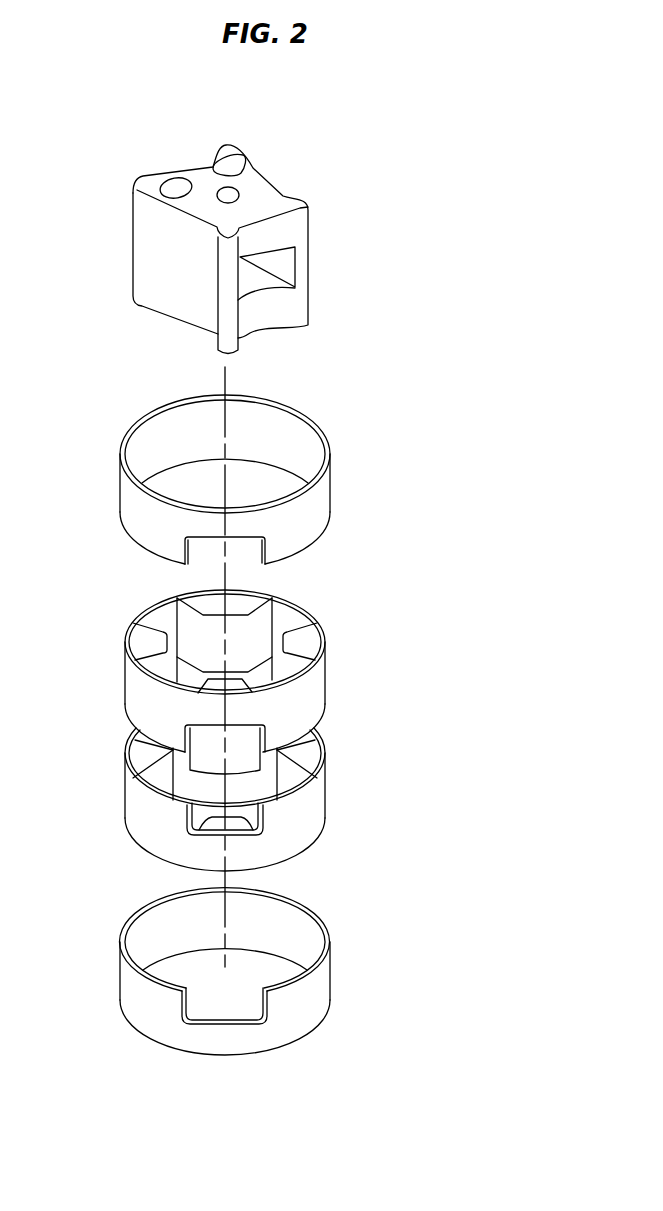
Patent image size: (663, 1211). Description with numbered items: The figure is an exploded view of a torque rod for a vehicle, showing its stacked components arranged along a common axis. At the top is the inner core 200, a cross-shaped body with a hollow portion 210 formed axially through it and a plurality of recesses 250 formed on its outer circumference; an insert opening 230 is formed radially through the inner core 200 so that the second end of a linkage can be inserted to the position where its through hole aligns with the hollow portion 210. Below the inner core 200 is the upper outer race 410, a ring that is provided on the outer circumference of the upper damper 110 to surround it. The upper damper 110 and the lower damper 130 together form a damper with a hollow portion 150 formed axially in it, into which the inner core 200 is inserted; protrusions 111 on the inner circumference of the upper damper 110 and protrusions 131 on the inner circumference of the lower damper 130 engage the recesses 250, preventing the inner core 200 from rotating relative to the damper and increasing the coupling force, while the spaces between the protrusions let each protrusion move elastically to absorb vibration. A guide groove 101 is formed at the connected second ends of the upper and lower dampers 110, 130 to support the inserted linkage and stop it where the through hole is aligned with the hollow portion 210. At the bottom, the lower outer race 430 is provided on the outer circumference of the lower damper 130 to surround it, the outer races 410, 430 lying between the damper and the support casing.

The inner core 200 is at (352, 269).
The hollow portion of the inner core 210 is at (233, 193).
The recesses 250 is at (195, 167).
The insert opening 230 is at (282, 258).
The upper outer race 410 is at (380, 473).
The upper damper 110 is at (351, 678).
The protrusions 111 is at (238, 605).
The guide groove 101 is at (243, 757).
The lower damper 130 is at (355, 805).
The protrusions 131 is at (233, 827).
The hollow portion of the damper 150 is at (210, 812).
The lower outer race 430 is at (368, 987).